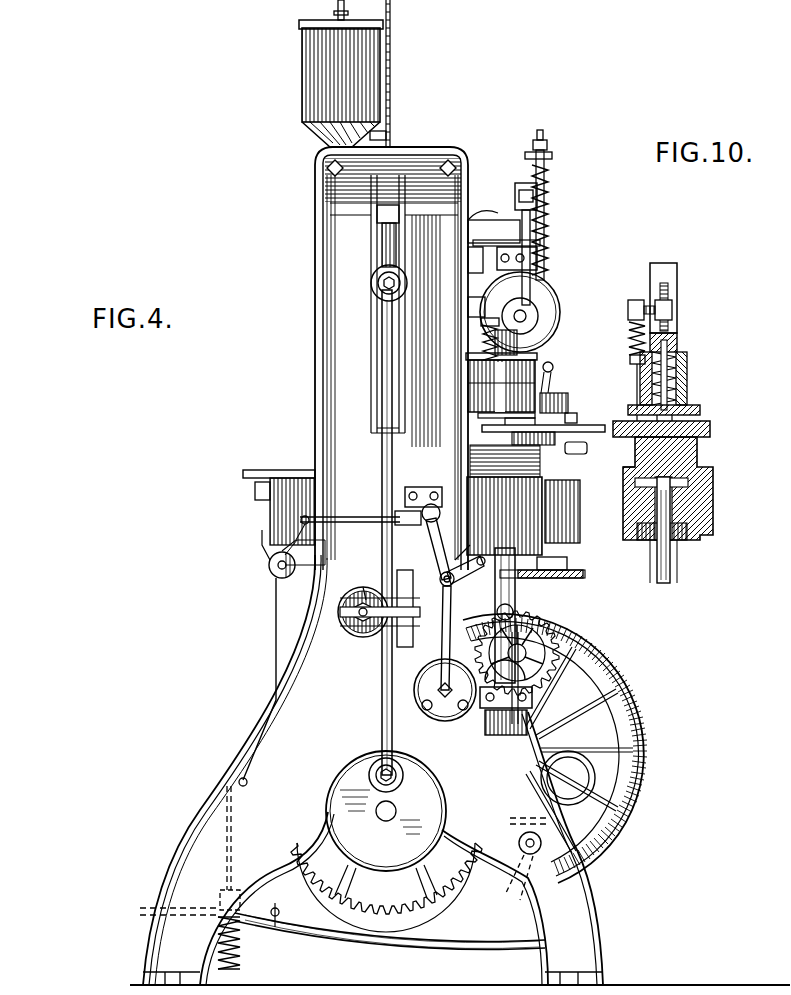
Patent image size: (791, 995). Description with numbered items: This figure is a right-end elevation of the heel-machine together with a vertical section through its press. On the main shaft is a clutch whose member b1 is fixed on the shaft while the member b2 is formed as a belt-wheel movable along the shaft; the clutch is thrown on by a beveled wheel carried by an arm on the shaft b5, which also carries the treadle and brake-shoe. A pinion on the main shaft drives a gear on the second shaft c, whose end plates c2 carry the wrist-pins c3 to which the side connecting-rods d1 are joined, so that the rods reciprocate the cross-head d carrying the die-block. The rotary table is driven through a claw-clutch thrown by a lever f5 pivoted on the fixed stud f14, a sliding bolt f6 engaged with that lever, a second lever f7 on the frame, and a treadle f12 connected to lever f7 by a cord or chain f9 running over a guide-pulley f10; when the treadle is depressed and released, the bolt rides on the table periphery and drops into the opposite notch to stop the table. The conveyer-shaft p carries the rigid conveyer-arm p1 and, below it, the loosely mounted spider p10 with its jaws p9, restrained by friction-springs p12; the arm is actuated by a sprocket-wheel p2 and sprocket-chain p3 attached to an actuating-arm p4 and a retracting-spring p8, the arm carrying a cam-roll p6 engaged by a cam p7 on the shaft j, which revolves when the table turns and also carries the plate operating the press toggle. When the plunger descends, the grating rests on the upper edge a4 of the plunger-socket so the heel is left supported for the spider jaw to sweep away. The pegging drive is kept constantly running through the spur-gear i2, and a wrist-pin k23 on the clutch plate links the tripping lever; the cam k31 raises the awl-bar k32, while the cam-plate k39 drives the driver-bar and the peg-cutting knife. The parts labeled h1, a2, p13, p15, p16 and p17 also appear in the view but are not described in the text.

In FIG. 4, the hopper h1 is at (306, 78).
In FIG. 4, the piston a2 is at (377, 211).
In FIG. 4, the cross-head d is at (388, 251).
In FIG. 4, the side connecting-rods d1 is at (382, 450).
In FIG. 4, the second shaft c is at (376, 809).
In FIG. 4, the plates c2 is at (360, 790).
In FIG. 4, the wrist-pins c3 is at (378, 766).
In FIG. 4, the clutch member b1 is at (623, 752).
In FIG. 4, the clutch member formed as belt-wheel b2 is at (643, 693).
In FIG. 4, the shaft b5 is at (528, 848).
In FIG. 4, the guide-pulley f10 is at (275, 572).
In FIG. 4, the cord or chain f9 is at (275, 657).
In FIG. 4, the second lever f7 is at (347, 516).
In FIG. 4, the sliding pin or bolt f6 is at (430, 504).
In FIG. 4, the lever f5 is at (440, 540).
In FIG. 4, the fixed bracket or stud f14 is at (428, 630).
In FIG. 4, the treadle f12 is at (326, 934).
In FIG. 4, the conveyer-shaft p is at (480, 448).
In FIG. 10, the conveyer-shaft p is at (698, 451).
In FIG. 10, the conveyer-arm p1 is at (688, 404).
In FIG. 4, the sprocket-wheel p2 is at (560, 577).
In FIG. 10, the sprocket-wheel p2 is at (628, 416).
In FIG. 4, the sprocket-chain p3 is at (553, 616).
In FIG. 10, the sprocket-chain p3 is at (670, 558).
In FIG. 4, the actuating-arm p4 is at (393, 597).
In FIG. 4, the pin p15 is at (352, 600).
In FIG. 4, the cam-roll p6 is at (358, 626).
In FIG. 10, the cam p7 is at (683, 383).
In FIG. 10, the retracting-spring p8 is at (680, 357).
In FIG. 4, the jaws or heads p9 is at (512, 293).
In FIG. 10, the jaws or heads p9 is at (667, 293).
In FIG. 4, the spider p10 is at (468, 383).
In FIG. 10, the spider p10 is at (636, 383).
In FIG. 4, the friction-springs p12 is at (467, 558).
In FIG. 4, the link p13 is at (450, 572).
In FIG. 4, the spring p16 is at (484, 335).
In FIG. 10, the spring p16 is at (630, 337).
In FIG. 10, the plate p17 is at (683, 428).
In FIG. 10, the upper edge of the plunger-socket a4 is at (637, 450).
In FIG. 4, the shaft j is at (356, 642).
In FIG. 4, the spur-gear i2 is at (560, 645).
In FIG. 4, the wrist-pin k23 is at (548, 196).
In FIG. 4, the awl-bar k32 is at (540, 246).
In FIG. 4, the cam-plate k39 is at (553, 305).
In FIG. 4, the cam k31 is at (538, 320).